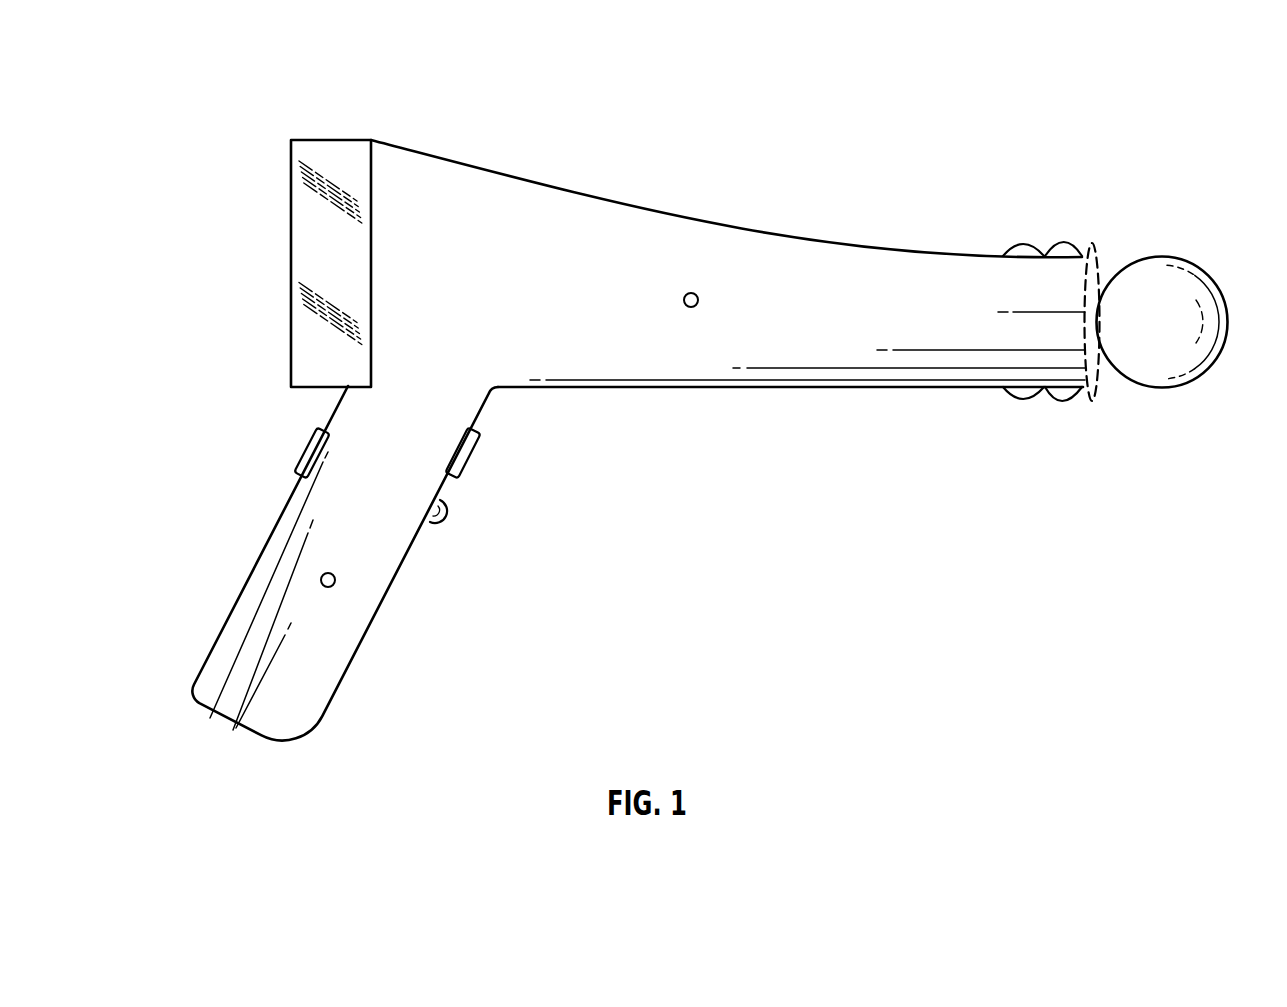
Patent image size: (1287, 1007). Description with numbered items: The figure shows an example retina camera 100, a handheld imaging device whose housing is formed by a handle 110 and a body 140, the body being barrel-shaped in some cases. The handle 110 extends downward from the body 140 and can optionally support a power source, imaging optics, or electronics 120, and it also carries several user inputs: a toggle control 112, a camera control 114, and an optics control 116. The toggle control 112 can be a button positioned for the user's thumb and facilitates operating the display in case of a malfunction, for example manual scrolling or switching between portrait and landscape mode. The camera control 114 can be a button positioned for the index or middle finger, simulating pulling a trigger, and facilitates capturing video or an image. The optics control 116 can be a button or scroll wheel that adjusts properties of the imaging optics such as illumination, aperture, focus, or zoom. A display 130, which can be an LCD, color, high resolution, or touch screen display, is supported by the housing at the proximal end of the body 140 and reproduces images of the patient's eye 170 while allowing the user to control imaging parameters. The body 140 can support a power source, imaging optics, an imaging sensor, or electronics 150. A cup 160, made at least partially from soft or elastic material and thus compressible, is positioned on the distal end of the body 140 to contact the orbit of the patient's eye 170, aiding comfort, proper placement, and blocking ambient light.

The retina camera 100 is at (239, 95).
The handle 110 is at (318, 693).
The toggle control 112 is at (305, 447).
The camera control 114 is at (475, 457).
The optics control 116 is at (448, 518).
The electronics 120 is at (326, 573).
The display 130 is at (338, 160).
The body 140 is at (812, 342).
The electronics 150 is at (693, 292).
The cup 160 is at (1060, 242).
The patient's eye 170 is at (1190, 259).